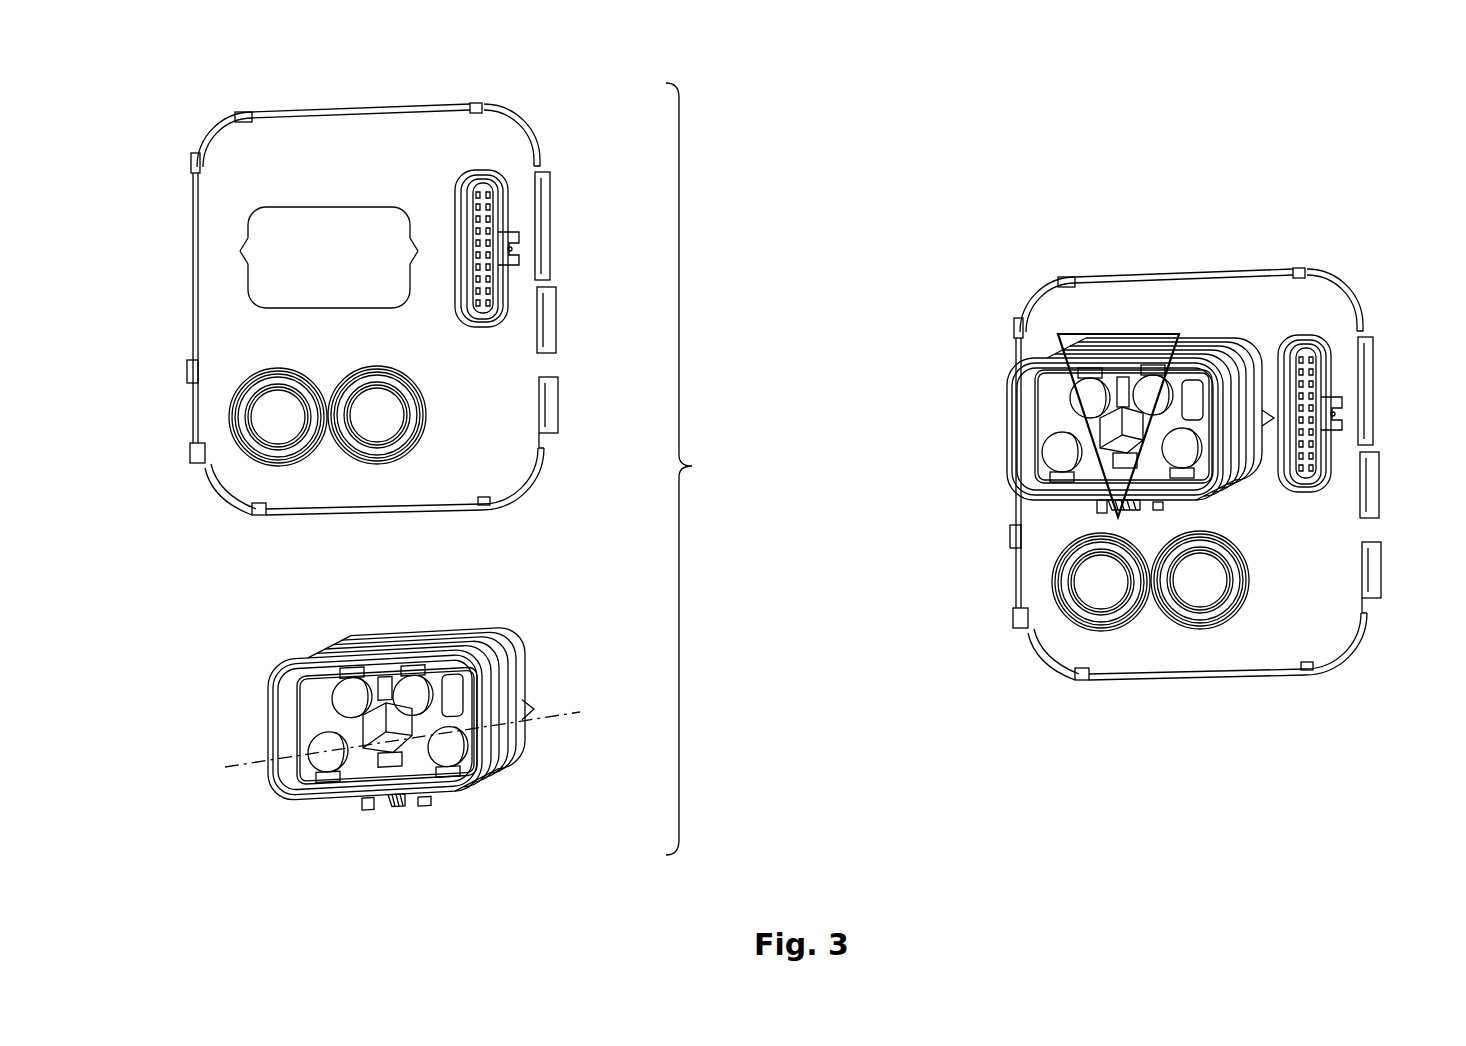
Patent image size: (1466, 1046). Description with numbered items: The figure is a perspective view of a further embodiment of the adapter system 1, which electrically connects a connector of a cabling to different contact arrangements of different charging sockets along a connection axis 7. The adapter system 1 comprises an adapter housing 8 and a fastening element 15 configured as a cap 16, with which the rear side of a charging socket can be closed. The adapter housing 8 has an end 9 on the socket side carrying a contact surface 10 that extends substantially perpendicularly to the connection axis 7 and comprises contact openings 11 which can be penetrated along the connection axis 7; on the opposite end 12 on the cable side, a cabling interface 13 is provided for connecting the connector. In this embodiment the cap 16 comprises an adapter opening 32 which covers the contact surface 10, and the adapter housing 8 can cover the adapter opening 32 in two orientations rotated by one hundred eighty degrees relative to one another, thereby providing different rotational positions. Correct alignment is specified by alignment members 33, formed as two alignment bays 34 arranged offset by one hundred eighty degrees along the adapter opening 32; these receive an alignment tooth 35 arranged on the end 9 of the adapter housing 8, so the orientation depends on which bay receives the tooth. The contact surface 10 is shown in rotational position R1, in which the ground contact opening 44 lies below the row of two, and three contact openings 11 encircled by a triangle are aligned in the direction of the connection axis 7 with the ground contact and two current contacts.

The adapter system 1 is at (956, 75).
The connection axis 7 is at (563, 717).
The adapter housing 8 is at (262, 748).
The end on the socket side 9 is at (515, 640).
The contact surface 10 is at (322, 688).
The contact openings 11 is at (327, 733).
The end on the cable side 12 is at (275, 812).
The cabling interface 13 is at (478, 796).
The fastening element 15 is at (202, 110).
The cap 16 is at (382, 152).
The adapter opening 32 is at (318, 240).
The alignment members 33 is at (421, 233).
The alignment bays 34 is at (244, 240).
The alignment tooth 35 is at (530, 708).
The ground contact opening 44 is at (1110, 452).
The rotational position R1 is at (1120, 310).